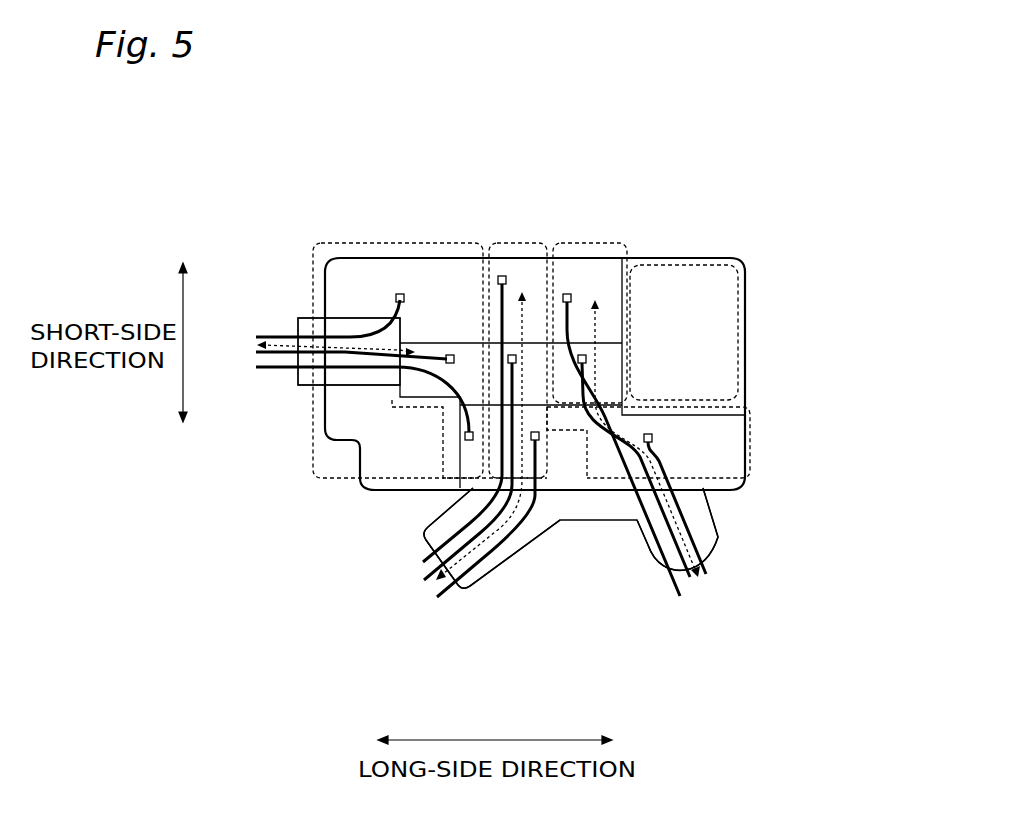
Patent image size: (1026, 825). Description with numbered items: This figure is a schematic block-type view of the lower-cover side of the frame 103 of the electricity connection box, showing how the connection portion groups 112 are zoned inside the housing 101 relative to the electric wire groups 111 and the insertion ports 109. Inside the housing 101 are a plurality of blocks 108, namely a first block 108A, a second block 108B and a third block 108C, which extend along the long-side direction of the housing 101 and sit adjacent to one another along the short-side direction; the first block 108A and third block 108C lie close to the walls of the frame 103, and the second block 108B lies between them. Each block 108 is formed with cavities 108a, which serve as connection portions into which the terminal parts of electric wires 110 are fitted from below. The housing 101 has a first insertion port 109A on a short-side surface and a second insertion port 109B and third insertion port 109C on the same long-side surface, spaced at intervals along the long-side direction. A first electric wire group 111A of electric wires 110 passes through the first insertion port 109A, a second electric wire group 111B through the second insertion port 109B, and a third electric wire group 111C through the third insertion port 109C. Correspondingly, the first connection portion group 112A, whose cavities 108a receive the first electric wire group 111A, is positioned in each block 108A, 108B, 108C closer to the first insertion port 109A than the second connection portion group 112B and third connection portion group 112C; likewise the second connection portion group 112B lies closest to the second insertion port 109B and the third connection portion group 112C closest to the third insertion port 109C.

The housing 101 is at (584, 423).
The frame 103 is at (750, 290).
The block 108 is at (632, 309).
The first block 108A is at (450, 257).
The second block 108B is at (533, 347).
The third block 108C is at (693, 412).
The cavity 108a is at (399, 297).
The insertion port 109 is at (526, 498).
The first insertion port 109A is at (300, 386).
The second insertion port 109B is at (455, 593).
The third insertion port 109C is at (718, 542).
The electric wire 110 is at (260, 337).
The electric wire group 111 is at (460, 424).
The first electric wire group 111A is at (328, 208).
The second electric wire group 111B is at (352, 612).
The third electric wire group 111C is at (722, 640).
The connection portion group 112 is at (544, 326).
The first connection portion group 112A is at (382, 243).
The second connection portion group 112B is at (508, 243).
The third connection portion group 112C is at (630, 290).